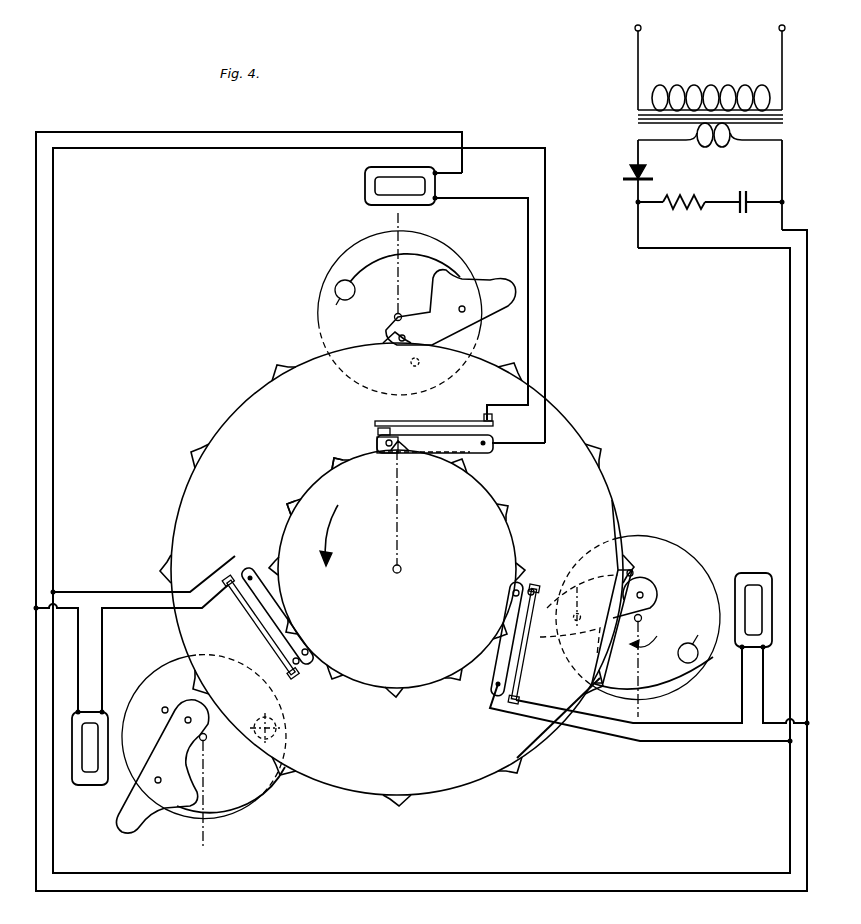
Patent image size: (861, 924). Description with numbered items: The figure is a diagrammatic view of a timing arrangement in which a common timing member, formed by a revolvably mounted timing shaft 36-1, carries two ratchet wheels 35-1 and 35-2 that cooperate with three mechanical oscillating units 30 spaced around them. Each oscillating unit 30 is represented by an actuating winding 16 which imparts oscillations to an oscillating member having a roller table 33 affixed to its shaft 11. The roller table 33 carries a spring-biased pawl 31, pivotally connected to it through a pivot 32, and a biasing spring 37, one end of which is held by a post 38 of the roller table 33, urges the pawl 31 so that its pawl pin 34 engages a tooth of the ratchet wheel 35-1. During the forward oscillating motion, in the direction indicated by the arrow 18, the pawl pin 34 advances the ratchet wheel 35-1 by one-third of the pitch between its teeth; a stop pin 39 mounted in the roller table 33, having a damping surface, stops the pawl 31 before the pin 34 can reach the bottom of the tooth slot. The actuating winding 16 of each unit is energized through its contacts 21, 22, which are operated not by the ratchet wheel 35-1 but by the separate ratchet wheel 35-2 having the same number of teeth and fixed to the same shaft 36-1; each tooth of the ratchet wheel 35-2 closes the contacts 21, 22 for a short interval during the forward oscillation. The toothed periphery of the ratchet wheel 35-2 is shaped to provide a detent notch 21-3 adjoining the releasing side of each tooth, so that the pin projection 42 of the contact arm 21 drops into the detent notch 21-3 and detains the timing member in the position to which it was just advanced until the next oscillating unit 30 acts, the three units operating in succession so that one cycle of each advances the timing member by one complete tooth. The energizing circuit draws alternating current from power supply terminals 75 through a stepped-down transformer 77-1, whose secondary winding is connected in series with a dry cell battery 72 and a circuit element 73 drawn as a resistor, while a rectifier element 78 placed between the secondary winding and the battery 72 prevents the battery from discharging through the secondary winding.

The shaft 11 is at (401, 314).
The actuating winding 16 is at (364, 183).
The arrow 18 is at (655, 643).
The contact arm 21 is at (478, 446).
The detent notch 21-3 is at (294, 503).
The contact 22 is at (450, 420).
The mechanical oscillating unit 30 is at (318, 268).
The pawl 31 is at (468, 285).
The pivot 32 is at (466, 311).
The roller table 33 is at (380, 246).
The pawl pin 34 is at (406, 338).
The ratchet wheel 35-1 is at (606, 480).
The ratchet wheel 35-2 is at (512, 532).
The timing shaft 36-1 is at (402, 568).
The biasing spring 37 is at (421, 251).
The post 38 is at (356, 290).
The stop pin 39 is at (413, 366).
The pin projection 42 is at (377, 432).
The dry cell battery 72 is at (750, 201).
The resistor 73 is at (683, 200).
The power supply terminals 75 is at (779, 27).
The transformer 77-1 is at (641, 113).
The rectifier element 78 is at (634, 170).